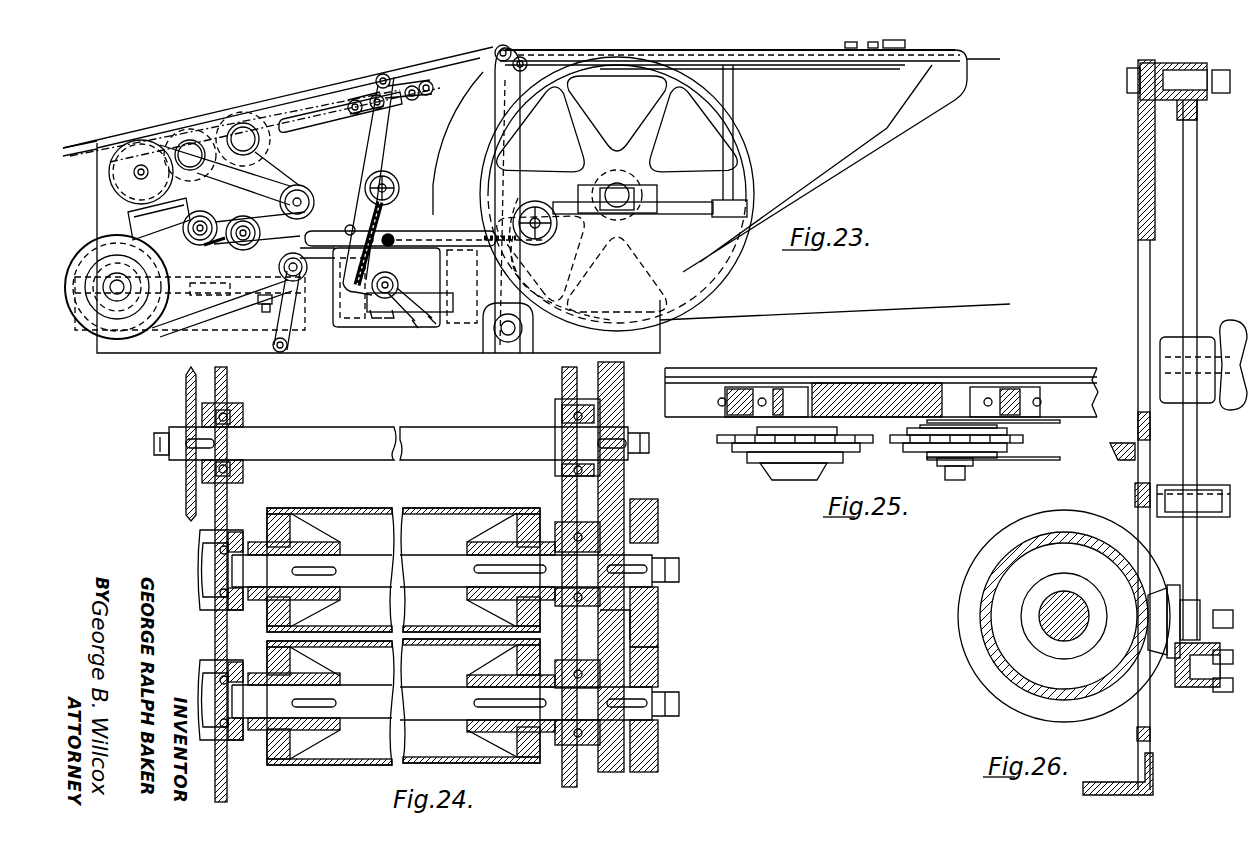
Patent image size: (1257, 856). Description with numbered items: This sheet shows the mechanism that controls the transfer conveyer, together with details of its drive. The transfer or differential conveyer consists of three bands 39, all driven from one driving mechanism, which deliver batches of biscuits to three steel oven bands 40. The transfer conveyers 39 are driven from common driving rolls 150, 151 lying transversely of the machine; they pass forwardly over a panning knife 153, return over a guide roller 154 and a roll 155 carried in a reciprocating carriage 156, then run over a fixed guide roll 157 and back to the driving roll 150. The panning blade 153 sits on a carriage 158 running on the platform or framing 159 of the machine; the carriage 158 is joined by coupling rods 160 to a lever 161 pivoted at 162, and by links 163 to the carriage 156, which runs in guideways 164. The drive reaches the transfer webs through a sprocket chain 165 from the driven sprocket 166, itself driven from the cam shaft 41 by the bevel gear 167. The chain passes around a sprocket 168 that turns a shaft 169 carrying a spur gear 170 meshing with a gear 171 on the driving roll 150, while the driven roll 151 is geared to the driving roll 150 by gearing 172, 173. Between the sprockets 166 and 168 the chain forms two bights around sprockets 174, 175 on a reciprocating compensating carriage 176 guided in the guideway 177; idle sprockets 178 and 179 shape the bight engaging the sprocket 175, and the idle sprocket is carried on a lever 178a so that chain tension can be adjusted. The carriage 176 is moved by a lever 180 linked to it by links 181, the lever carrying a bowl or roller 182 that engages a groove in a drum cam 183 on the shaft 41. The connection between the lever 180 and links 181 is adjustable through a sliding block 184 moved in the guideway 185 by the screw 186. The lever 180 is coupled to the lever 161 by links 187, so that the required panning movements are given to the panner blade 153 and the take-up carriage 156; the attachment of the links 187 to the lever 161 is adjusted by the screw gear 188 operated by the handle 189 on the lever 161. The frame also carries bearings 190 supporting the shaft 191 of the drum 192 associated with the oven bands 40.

In FIG. 23, the transfer bands 39 is at (430, 60).
In FIG. 23, the oven bands 40 is at (980, 58).
In FIG. 23, the cam shaft 41 is at (283, 324).
In FIG. 26, the cam shaft 41 is at (1040, 621).
In FIG. 23, the driving roll 150 is at (190, 138).
In FIG. 24, the driving roll 150 is at (343, 508).
In FIG. 23, the driven roll 151 is at (243, 120).
In FIG. 24, the driven roll 151 is at (358, 768).
In FIG. 23, the panning knife 153 is at (870, 50).
In FIG. 23, the guide roller 154 is at (528, 52).
In FIG. 23, the roll 155 is at (355, 99).
In FIG. 23, the reciprocating carriage 156 is at (385, 74).
In FIG. 23, the fixed guide roll 157 is at (470, 100).
In FIG. 23, the carriage 158 is at (676, 60).
In FIG. 23, the platform or framing 159 is at (815, 70).
In FIG. 23, the coupling rods 160 is at (503, 47).
In FIG. 23, the lever 161 is at (512, 150).
In FIG. 23, the pivot 162 is at (520, 330).
In FIG. 23, the links 163 is at (617, 67).
In FIG. 23, the guideways 164 is at (297, 116).
In FIG. 23, the sprocket chain 165 is at (208, 320).
In FIG. 23, the driven sprocket 166 is at (112, 340).
In FIG. 23, the bevel gear 167 is at (160, 266).
In FIG. 23, the sprocket 168 is at (130, 140).
In FIG. 24, the sprocket 168 is at (183, 408).
In FIG. 23, the shaft 169 is at (140, 172).
In FIG. 24, the shaft 169 is at (335, 430).
In FIG. 24, the spur gear 170 is at (622, 484).
In FIG. 24, the gear 171 is at (630, 531).
In FIG. 24, the gearing 172 is at (660, 588).
In FIG. 24, the gearing 173 is at (656, 646).
In FIG. 23, the sprocket 174 is at (205, 245).
In FIG. 25, the sprocket 174 is at (717, 441).
In FIG. 23, the sprocket 175 is at (250, 218).
In FIG. 25, the sprocket 175 is at (895, 448).
In FIG. 23, the compensating carriage 176 is at (210, 215).
In FIG. 25, the compensating carriage 176 is at (868, 383).
In FIG. 23, the guideway 177 is at (166, 222).
In FIG. 23, the idle sprocket 178 is at (280, 265).
In FIG. 23, the lever 178a is at (280, 332).
In FIG. 23, the idle sprocket 179 is at (306, 187).
In FIG. 23, the lever 180 is at (372, 150).
In FIG. 26, the lever 180 is at (1193, 276).
In FIG. 23, the links 181 is at (330, 240).
In FIG. 25, the links 181 is at (1033, 424).
In FIG. 26, the links 181 is at (1163, 485).
In FIG. 23, the bowl or roller 182 is at (393, 281).
In FIG. 26, the bowl or roller 182 is at (1158, 621).
In FIG. 23, the drum cam 183 is at (428, 290).
In FIG. 26, the drum cam 183 is at (958, 621).
In FIG. 23, the sliding block 184 is at (358, 258).
In FIG. 23, the guideway 185 is at (389, 231).
In FIG. 23, the screw 186 is at (391, 204).
In FIG. 23, the links 187 is at (447, 236).
In FIG. 23, the screw gear 188 is at (518, 266).
In FIG. 23, the handle 189 is at (546, 244).
In FIG. 23, the bearings 190 is at (655, 195).
In FIG. 23, the shaft 191 is at (612, 186).
In FIG. 23, the drum 192 is at (747, 153).